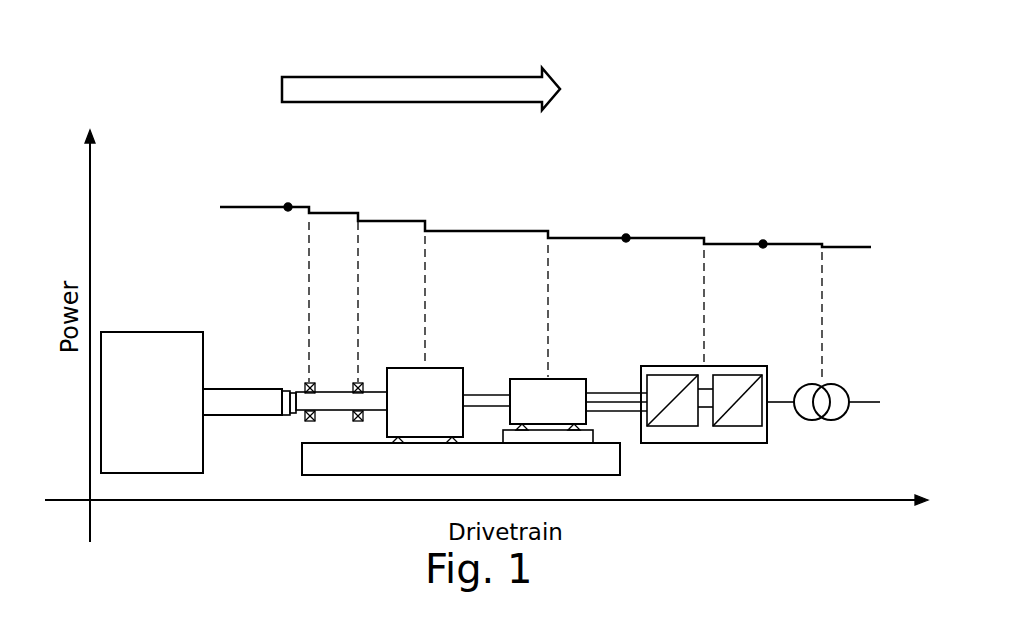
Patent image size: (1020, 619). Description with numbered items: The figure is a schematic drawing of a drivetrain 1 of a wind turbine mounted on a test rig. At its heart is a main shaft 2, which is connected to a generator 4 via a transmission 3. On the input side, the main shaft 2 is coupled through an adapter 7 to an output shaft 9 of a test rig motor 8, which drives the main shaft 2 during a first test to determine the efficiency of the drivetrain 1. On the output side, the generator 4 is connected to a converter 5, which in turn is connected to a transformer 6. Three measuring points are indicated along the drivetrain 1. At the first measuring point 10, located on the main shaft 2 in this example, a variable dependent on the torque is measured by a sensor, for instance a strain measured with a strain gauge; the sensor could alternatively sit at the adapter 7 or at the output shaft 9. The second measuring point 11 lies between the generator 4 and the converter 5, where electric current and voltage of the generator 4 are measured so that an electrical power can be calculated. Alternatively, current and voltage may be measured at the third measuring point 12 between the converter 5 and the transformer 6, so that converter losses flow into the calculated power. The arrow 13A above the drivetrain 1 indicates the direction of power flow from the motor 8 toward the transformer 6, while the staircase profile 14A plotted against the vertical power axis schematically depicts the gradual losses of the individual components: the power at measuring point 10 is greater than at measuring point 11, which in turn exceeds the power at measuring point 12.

The drivetrain 1 is at (884, 302).
The main shaft 2 is at (300, 397).
The transmission 3 is at (417, 415).
The generator 4 is at (540, 414).
The converter 5 is at (698, 443).
The transformer 6 is at (815, 420).
The adapter 7 is at (284, 392).
The test rig motor 8 is at (144, 414).
The output shaft 9 is at (227, 414).
The first measuring point 10 is at (288, 192).
The second measuring point 11 is at (626, 226).
The third measuring point 12 is at (763, 232).
The arrow 13A is at (405, 77).
The staircase profile 14A is at (848, 246).